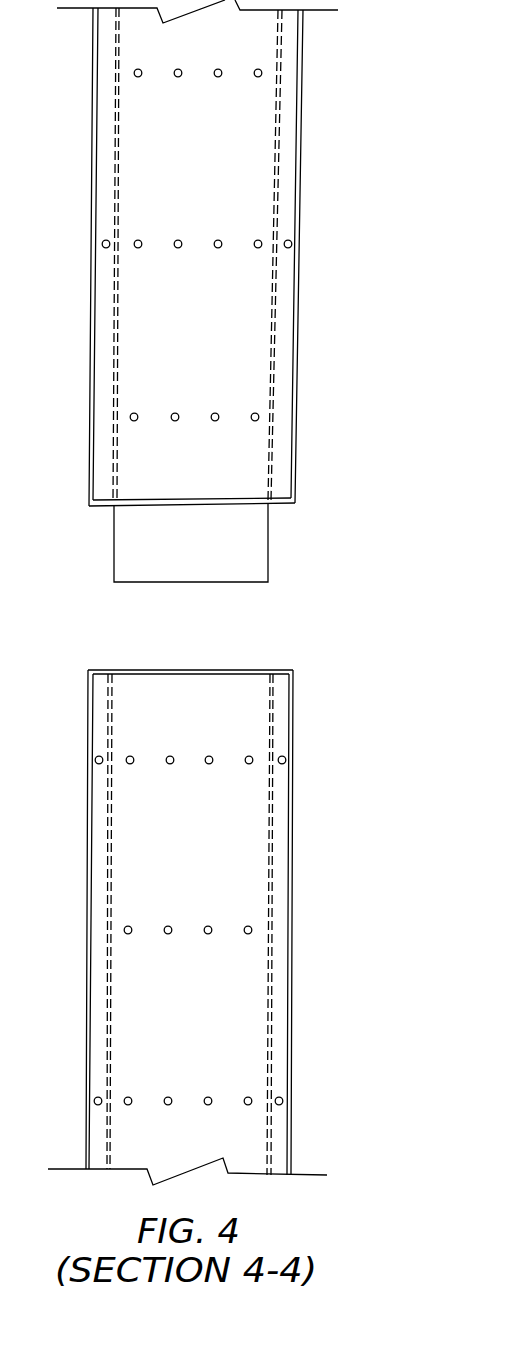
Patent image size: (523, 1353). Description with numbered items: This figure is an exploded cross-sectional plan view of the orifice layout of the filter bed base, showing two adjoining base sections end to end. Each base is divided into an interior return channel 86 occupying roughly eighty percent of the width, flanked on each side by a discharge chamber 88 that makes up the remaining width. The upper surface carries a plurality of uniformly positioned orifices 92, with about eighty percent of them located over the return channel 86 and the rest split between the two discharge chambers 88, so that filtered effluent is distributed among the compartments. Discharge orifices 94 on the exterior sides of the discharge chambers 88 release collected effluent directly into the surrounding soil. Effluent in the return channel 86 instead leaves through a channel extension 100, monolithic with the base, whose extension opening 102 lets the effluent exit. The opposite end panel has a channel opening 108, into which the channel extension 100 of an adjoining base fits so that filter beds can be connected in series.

The interior return channel 86 is at (155, 342).
The discharge chamber 88 is at (108, 160).
The orifices 92 is at (287, 249).
The discharge orifices 94 is at (93, 72).
The channel extension 100 is at (173, 563).
The extension opening 102 is at (193, 586).
The channel opening 108 is at (193, 668).